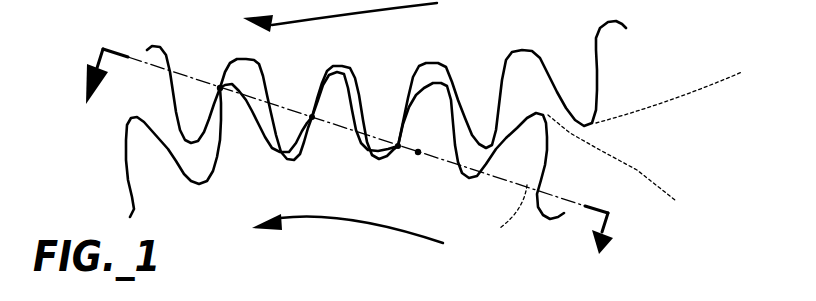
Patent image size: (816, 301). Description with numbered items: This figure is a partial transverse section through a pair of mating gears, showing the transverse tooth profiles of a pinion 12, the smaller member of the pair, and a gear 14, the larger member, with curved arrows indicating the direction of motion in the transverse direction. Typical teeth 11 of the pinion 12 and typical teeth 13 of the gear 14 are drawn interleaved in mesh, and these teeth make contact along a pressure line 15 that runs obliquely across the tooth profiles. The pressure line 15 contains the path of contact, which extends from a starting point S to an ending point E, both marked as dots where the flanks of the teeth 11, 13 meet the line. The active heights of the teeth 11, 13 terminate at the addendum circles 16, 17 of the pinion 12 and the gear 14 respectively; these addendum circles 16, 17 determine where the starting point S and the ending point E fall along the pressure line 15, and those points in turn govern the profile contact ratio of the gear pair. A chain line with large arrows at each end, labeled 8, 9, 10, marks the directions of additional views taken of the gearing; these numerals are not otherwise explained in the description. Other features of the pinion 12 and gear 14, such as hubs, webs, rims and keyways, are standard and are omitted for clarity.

The line of action 8 is at (336, 172).
The pressure line 9 is at (336, 172).
The contact line 10 is at (336, 172).
The teeth 11 is at (547, 165).
The pinion 12 is at (367, 145).
The teeth 13 is at (600, 73).
The gear 14 is at (408, 90).
The pressure line 15 is at (497, 211).
The addendum circle 16 is at (650, 177).
The addendum circle 17 is at (670, 107).
The ending point E is at (220, 88).
The starting point S is at (418, 152).